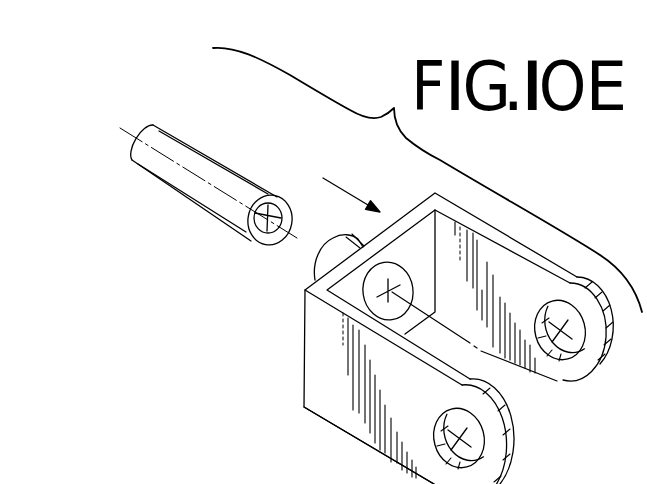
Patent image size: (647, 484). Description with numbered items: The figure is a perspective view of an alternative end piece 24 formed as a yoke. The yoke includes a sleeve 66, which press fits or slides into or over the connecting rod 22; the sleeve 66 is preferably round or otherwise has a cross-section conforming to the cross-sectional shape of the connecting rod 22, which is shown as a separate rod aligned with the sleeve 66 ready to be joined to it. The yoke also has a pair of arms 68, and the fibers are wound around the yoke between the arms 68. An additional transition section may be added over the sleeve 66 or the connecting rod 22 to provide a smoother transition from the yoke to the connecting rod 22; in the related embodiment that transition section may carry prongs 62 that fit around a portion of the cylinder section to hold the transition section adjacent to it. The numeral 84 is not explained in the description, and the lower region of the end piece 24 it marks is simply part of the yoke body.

The connecting rod 22 is at (135, 196).
The end piece 24 is at (417, 338).
The prongs 62 is at (223, 483).
The sleeve 66 is at (292, 287).
The arms 68 is at (565, 368).
The lower edge of bracket 84 is at (302, 417).